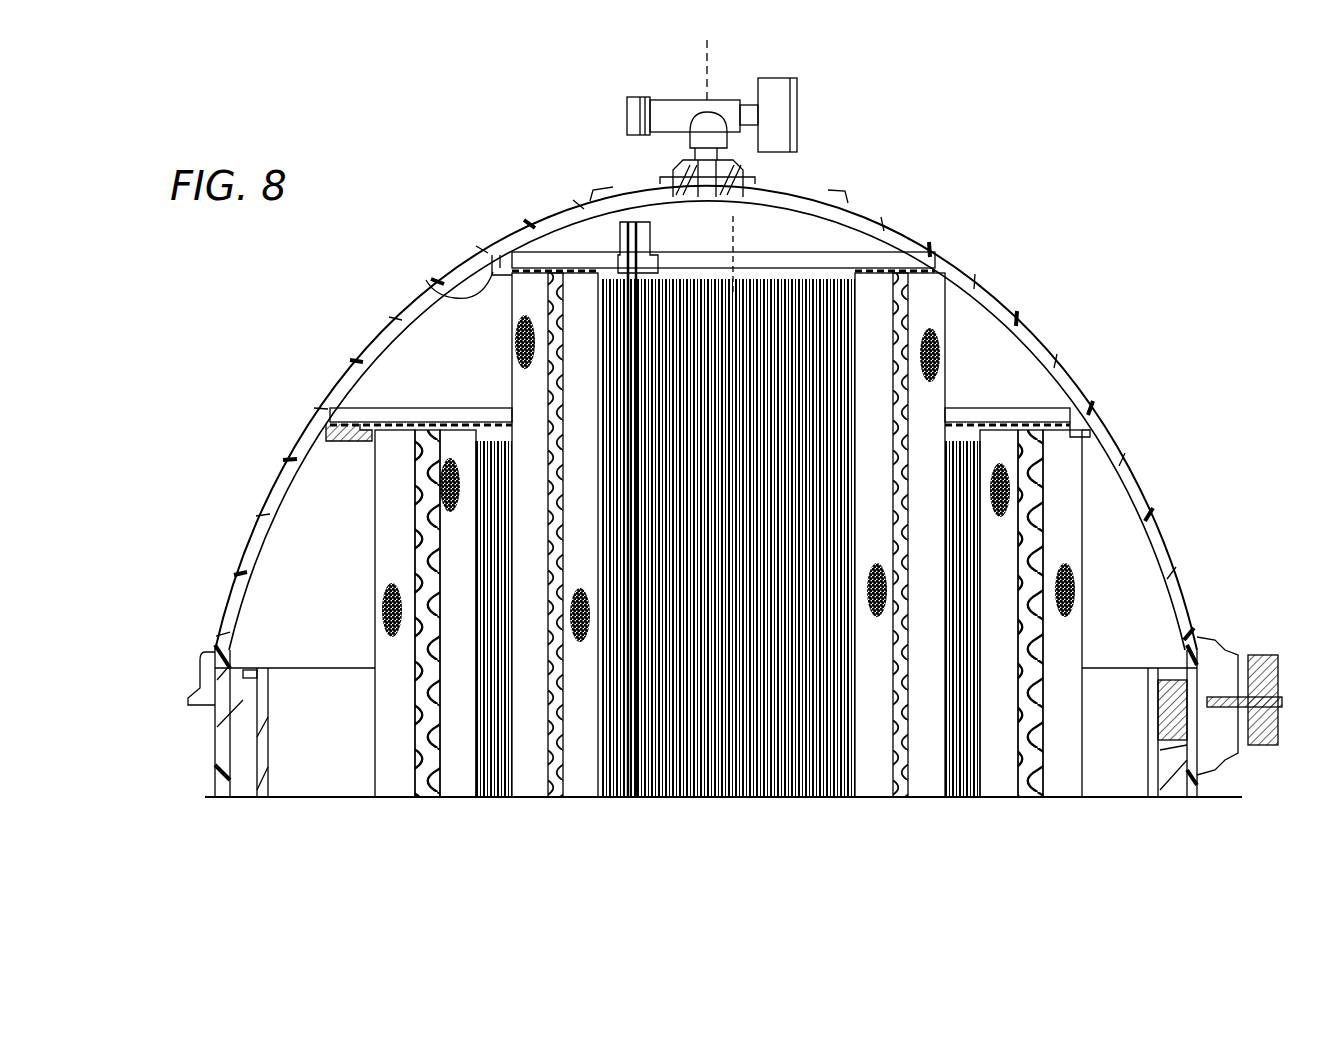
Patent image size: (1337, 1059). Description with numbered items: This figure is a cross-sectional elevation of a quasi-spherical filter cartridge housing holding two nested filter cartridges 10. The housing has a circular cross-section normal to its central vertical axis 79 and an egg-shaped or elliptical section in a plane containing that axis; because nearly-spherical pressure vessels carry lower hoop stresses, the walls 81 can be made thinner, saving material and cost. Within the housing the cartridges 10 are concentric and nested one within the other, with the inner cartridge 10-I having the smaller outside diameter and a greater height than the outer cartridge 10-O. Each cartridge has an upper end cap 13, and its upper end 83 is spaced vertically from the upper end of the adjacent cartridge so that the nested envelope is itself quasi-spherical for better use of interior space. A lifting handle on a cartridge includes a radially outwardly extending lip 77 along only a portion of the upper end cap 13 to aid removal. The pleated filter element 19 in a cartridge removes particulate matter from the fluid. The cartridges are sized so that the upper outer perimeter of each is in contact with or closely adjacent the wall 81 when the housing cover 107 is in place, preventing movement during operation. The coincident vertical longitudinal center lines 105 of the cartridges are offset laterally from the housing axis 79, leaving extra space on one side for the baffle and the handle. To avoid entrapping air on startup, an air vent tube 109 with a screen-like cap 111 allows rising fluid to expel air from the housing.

The filter cartridge 10 is at (814, 521).
The inner cartridge 10-I is at (930, 310).
The outer cartridge 10-O is at (1070, 505).
The upper end cap 13 is at (765, 258).
The filter element 19 is at (400, 720).
The lip 77 is at (413, 288).
The housing central vertical axis 79 is at (712, 45).
The walls 81 is at (320, 408).
The upper end 83 is at (552, 253).
The vertical longitudinal center line 105 is at (735, 220).
The housing cover 107 is at (1040, 322).
The air vent tube 109 is at (632, 232).
The screen-like cap 111 is at (651, 232).